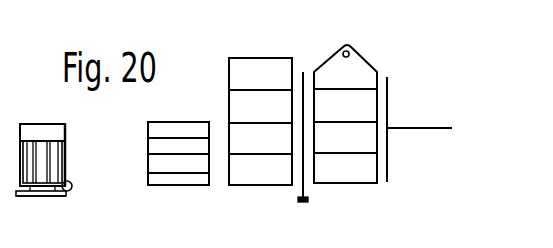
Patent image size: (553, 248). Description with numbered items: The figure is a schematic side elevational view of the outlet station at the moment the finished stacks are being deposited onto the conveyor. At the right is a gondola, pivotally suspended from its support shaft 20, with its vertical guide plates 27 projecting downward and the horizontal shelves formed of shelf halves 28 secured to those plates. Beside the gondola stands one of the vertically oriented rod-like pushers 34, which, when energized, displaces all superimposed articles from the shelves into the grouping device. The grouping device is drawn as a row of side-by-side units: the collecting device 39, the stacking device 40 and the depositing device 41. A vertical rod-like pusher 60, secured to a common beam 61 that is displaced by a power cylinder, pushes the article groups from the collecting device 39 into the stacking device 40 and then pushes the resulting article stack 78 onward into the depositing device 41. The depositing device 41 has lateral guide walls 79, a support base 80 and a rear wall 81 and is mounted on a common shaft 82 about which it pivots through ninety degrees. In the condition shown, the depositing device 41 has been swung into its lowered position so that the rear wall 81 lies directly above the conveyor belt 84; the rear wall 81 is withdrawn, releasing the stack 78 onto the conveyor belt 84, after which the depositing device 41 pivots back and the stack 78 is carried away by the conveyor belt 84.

The support shaft 20 is at (357, 50).
The guide plate 27 is at (366, 77).
The shelf half 28 is at (365, 120).
The pusher 34 is at (388, 145).
The collecting device 39 is at (257, 20).
The stacking device 40 is at (177, 92).
The depositing device 41 is at (44, 112).
The pusher 60 is at (300, 172).
The beam 61 is at (308, 199).
The article stack 78 is at (55, 127).
The lateral guide wall 79 is at (66, 130).
The support base 80 is at (66, 164).
The rear wall 81 is at (30, 197).
The shaft 82 is at (70, 189).
The conveyor belt 84 is at (58, 197).